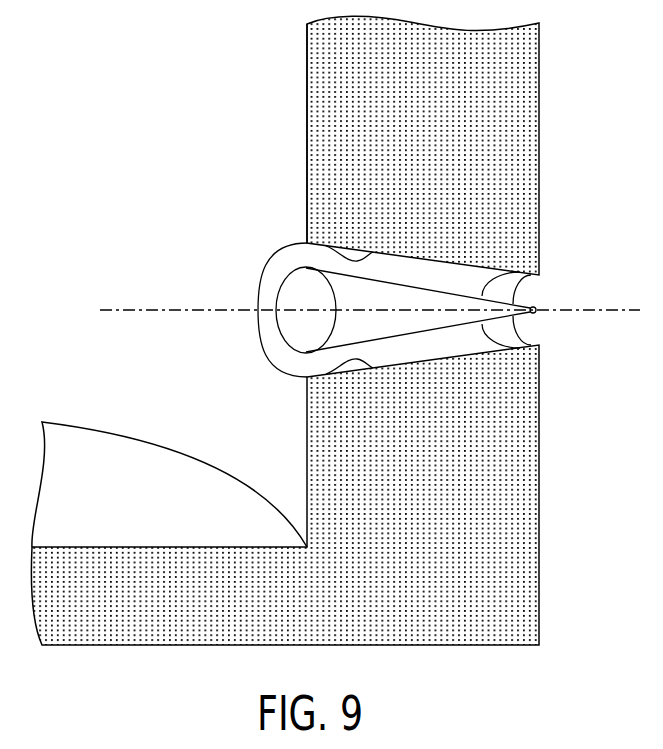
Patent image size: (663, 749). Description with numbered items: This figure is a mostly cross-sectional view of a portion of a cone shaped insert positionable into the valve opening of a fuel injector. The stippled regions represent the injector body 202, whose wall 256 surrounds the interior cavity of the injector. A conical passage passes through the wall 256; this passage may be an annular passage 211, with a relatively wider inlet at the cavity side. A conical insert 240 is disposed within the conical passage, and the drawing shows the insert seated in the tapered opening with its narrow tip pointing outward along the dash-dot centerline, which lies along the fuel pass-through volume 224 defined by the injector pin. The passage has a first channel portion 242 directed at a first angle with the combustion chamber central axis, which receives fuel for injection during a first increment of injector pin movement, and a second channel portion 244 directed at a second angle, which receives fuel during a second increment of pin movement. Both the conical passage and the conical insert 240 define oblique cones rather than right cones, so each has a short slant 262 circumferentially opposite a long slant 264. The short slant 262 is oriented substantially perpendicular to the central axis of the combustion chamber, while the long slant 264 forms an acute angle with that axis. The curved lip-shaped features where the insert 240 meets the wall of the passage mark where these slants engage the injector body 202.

The injector body 202 is at (522, 75).
The annular passage 211 is at (500, 405).
The fuel pass-through volume 224 is at (228, 290).
The conical insert 240 is at (447, 275).
The first channel portion 242 is at (293, 262).
The second channel portion 244 is at (293, 360).
The wall 256 is at (307, 42).
The short slant 262 is at (328, 373).
The long slant 264 is at (328, 247).